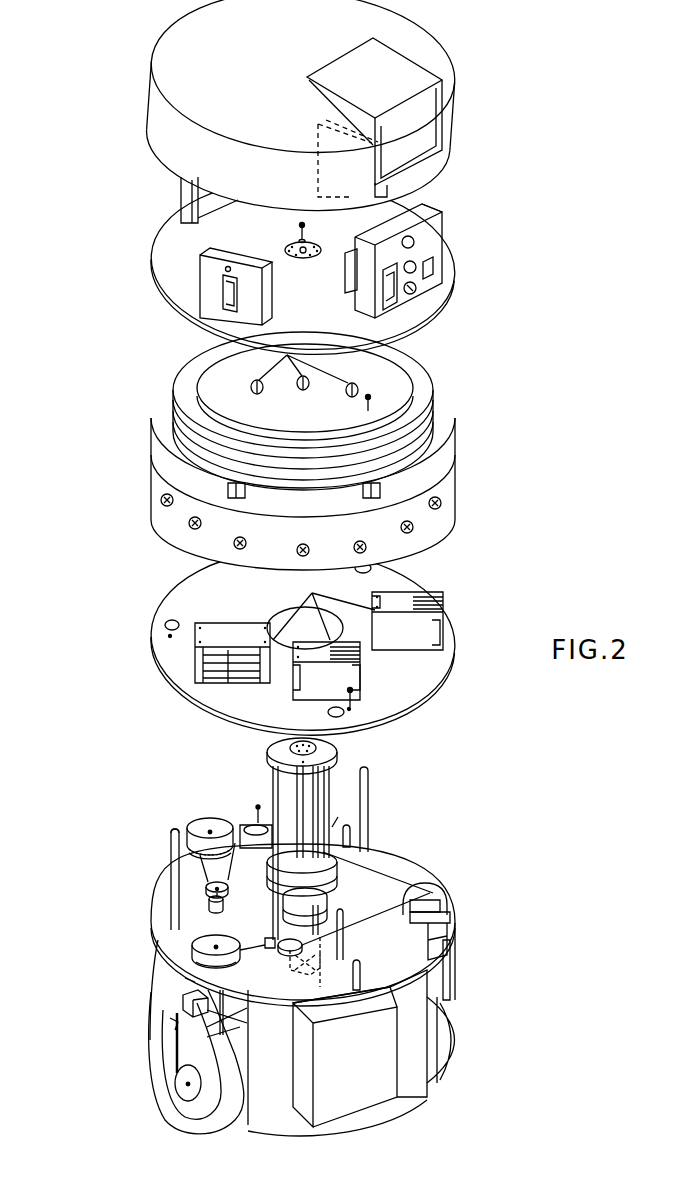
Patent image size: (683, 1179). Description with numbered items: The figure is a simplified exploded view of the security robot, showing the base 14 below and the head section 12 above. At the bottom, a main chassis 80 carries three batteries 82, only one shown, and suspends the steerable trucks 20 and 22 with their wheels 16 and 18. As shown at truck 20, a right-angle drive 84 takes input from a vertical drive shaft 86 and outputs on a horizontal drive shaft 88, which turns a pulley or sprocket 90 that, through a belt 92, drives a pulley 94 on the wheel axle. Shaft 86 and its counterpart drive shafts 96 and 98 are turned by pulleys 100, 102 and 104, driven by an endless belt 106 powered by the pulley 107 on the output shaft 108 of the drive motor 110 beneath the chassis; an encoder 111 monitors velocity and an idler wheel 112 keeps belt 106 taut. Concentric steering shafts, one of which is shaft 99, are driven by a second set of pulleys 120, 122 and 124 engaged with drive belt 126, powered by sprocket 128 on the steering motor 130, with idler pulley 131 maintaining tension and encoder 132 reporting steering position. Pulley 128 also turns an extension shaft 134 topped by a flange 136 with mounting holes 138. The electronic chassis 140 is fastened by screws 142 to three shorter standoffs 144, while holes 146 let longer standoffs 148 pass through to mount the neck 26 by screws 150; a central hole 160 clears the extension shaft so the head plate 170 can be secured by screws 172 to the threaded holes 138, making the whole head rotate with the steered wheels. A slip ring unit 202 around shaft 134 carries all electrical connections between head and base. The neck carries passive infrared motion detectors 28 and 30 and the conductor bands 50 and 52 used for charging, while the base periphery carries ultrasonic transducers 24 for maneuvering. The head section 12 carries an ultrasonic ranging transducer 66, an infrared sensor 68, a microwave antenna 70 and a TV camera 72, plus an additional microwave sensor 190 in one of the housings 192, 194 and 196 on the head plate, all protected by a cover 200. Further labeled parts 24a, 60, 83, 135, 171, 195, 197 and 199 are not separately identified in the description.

The head section 12 is at (476, 166).
The base 14 is at (523, 817).
The wheel 16 is at (180, 1113).
The wheel 18 is at (475, 1047).
The steerable truck 20 is at (160, 1048).
The steerable truck 22 is at (452, 980).
The ultrasonic transducer 24 is at (287, 355).
The screw 24a is at (190, 531).
The reduced neck 26 is at (537, 357).
The passive infrared motion detector 28 is at (227, 493).
The passive infrared motion detector 30 is at (397, 488).
The conductor band 50 is at (450, 425).
The conductor band 52 is at (432, 402).
The connector block 60 is at (412, 240).
The ultrasonic transducer 66 is at (414, 264).
The infrared sensor 68 is at (436, 266).
The microwave transmission and reception antenna 70 is at (352, 315).
The TV camera 72 is at (416, 290).
The main chassis 80 is at (183, 990).
The battery 82 is at (375, 1083).
The drive assembly 83 is at (203, 802).
The right-angle drive 84 is at (235, 1017).
The vertical drive shaft 86 is at (205, 942).
The horizontal drive shaft 88 is at (213, 1037).
The pulley or sprocket 90 is at (173, 1020).
The belt 92 is at (170, 1058).
The pulley 94 is at (203, 1085).
The drive shaft 96 is at (202, 828).
The drive shaft 98 is at (442, 890).
The steering shaft 99 is at (440, 930).
The pulley or sprocket 100 is at (214, 947).
The pulley or sprocket 102 is at (210, 833).
The pulley or sprocket 104 is at (443, 893).
The endless belt 106 is at (370, 858).
The pulley 107 is at (250, 800).
The output shaft 108 is at (258, 822).
The drive motor 110 is at (233, 867).
The encoder 111 is at (265, 910).
The idler wheel 112 is at (220, 885).
The pulley or sprocket 120 is at (187, 982).
The pulley or sprocket 122 is at (180, 830).
The pulley or sprocket 124 is at (450, 917).
The drive belt 126 is at (385, 885).
The sprocket 128 is at (323, 906).
The steering motor 130 is at (305, 973).
The idler pulley 131 is at (270, 936).
The encoder 132 is at (300, 990).
The extension shaft 134 is at (293, 783).
The spacer 135 is at (212, 914).
The flange 136 is at (263, 743).
The mounting holes 138 is at (333, 746).
The electronic chassis 140 is at (425, 590).
The screws 142 is at (354, 700).
The shorter standoffs 144 is at (152, 924).
The holes 146 is at (165, 625).
The longer standoffs 148 is at (171, 893).
The screws 150 is at (372, 396).
The central hole 160 is at (275, 622).
The head plate 170 is at (162, 256).
The box 171 is at (396, 88).
The screws 172 is at (298, 234).
The microwave sensor 190 is at (222, 296).
The housing 192 is at (283, 276).
The housing 194 is at (181, 203).
The hole 195 is at (225, 269).
The housing 196 is at (322, 147).
The pin 197 is at (324, 227).
The edge 199 is at (432, 206).
The cover 200 is at (172, 68).
The slip ring unit 202 is at (338, 810).